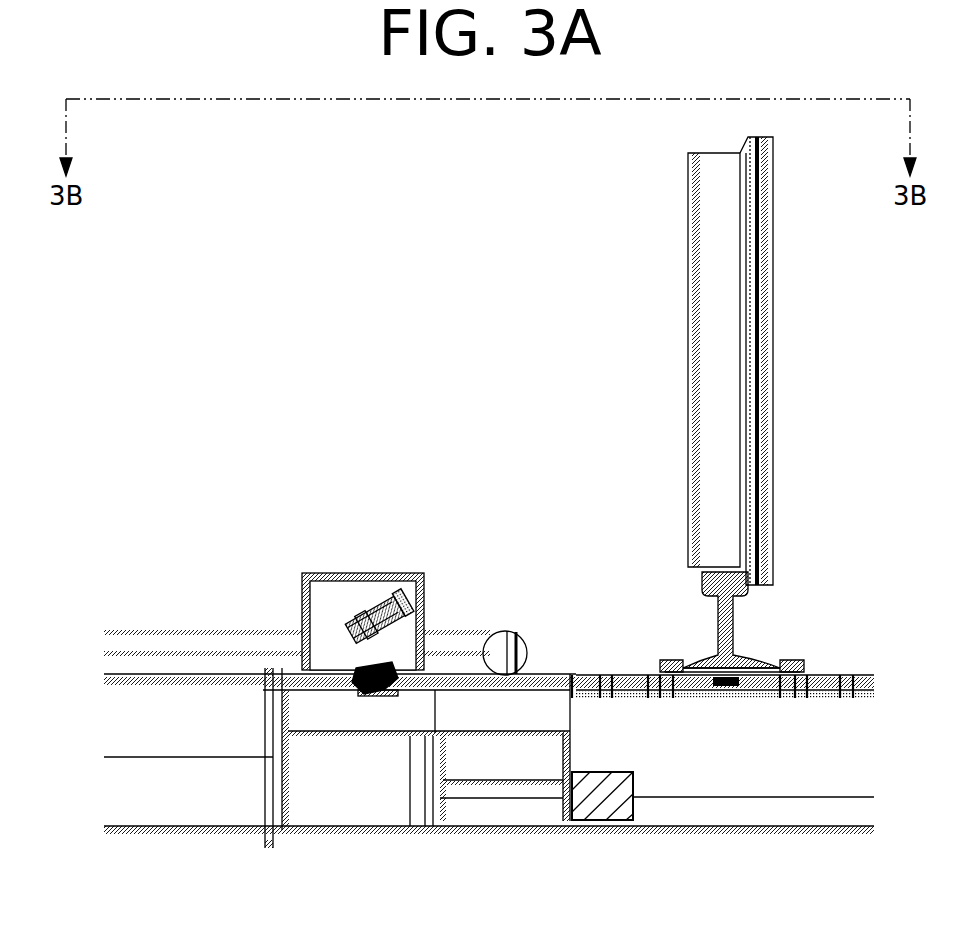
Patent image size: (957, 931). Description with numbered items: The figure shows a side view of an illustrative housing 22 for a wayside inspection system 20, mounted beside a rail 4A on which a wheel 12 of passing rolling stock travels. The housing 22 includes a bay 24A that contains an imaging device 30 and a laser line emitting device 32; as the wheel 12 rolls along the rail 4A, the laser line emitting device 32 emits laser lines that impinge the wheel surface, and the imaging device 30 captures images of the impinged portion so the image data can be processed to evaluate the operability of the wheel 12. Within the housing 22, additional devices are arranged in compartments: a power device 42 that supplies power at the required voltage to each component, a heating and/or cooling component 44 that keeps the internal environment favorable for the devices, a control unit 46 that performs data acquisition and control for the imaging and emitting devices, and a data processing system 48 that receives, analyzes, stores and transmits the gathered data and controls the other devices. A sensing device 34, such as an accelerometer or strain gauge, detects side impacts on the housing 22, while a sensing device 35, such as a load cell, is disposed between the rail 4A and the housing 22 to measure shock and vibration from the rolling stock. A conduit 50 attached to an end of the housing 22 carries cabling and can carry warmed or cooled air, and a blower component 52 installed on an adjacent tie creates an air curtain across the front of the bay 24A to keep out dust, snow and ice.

The wheel 12 is at (730, 361).
The wayside inspection system 20 is at (176, 408).
The rail 4A is at (706, 583).
The bay 24A is at (302, 598).
The imaging device 30 is at (384, 612).
The laser line emitting device 32 is at (362, 688).
The blower component 52 is at (460, 628).
The conduit 50 is at (489, 754).
The control unit 46 is at (419, 703).
The data processing system 48 is at (429, 778).
The power device 42 is at (505, 747).
The heating and/or cooling component 44 is at (510, 812).
The sensing device 34 is at (604, 806).
The sensing device 35 is at (727, 690).
The housing 22 is at (392, 828).